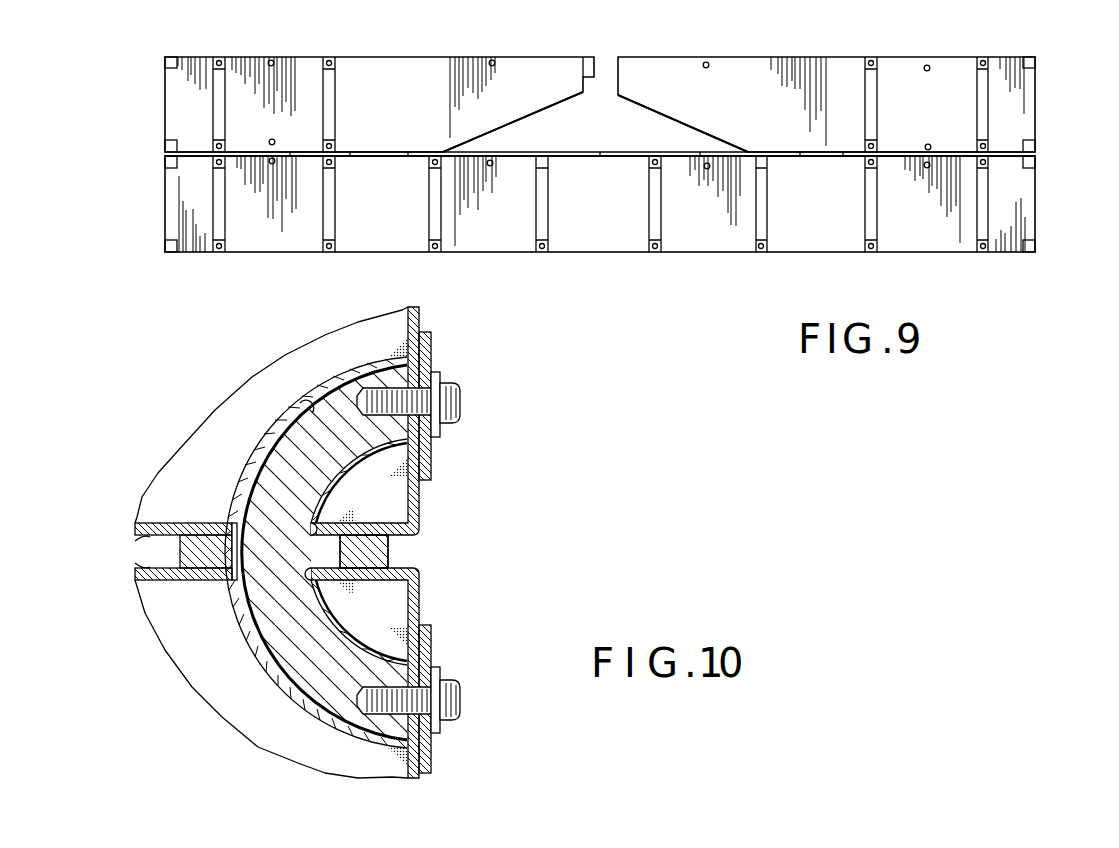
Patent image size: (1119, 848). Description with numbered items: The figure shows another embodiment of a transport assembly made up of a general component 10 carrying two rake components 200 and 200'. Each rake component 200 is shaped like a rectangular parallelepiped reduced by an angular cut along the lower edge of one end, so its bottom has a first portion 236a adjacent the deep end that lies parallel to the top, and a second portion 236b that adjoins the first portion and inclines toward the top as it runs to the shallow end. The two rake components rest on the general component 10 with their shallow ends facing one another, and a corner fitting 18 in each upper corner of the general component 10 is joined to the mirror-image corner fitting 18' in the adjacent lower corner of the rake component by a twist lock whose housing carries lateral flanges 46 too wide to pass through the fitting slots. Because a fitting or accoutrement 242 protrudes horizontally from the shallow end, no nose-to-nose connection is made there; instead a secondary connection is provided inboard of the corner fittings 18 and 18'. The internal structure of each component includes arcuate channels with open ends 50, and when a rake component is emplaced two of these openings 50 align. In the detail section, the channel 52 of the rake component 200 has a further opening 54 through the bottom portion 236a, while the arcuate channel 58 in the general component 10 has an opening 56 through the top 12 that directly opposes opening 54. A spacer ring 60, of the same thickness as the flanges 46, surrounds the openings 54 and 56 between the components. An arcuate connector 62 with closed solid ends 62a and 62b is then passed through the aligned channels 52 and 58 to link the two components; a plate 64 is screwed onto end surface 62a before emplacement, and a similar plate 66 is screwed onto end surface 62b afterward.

In FIG. 9, the general component 10 is at (272, 137).
In FIG. 10, the general component 10 is at (420, 598).
In FIG. 9, the top 12 is at (667, 156).
In FIG. 10, the top 12 is at (138, 563).
In FIG. 9, the corner fitting 18 is at (596, 204).
In FIG. 9, the corner fitting 18' is at (597, 104).
In FIG. 9, the lateral flanges 46 is at (165, 153).
In FIG. 9, the open ends of arcuate channels 50 is at (270, 60).
In FIG. 10, the open ends of arcuate channels 50 is at (303, 408).
In FIG. 10, the arcuate channel 52 is at (265, 428).
In FIG. 10, the opening 54 is at (388, 546).
In FIG. 10, the opening 56 is at (229, 597).
In FIG. 10, the arcuate channel 58 is at (268, 668).
In FIG. 10, the spacer ring 60 is at (378, 563).
In FIG. 10, the arcuate connector 62 is at (277, 490).
In FIG. 10, the end of arcuate connector 62a is at (433, 432).
In FIG. 10, the end of arcuate connector 62b is at (440, 676).
In FIG. 10, the plate 64 is at (432, 343).
In FIG. 10, the plate 66 is at (424, 754).
In FIG. 9, the rake component 200 is at (379, 83).
In FIG. 10, the rake component 200 is at (421, 421).
In FIG. 9, the rake component 200' is at (826, 83).
In FIG. 9, the first portion of bottom 236a is at (408, 156).
In FIG. 10, the first portion of bottom 236a is at (140, 535).
In FIG. 9, the second portion of bottom 236b is at (568, 100).
In FIG. 9, the fitting or accoutrement 242 is at (595, 58).